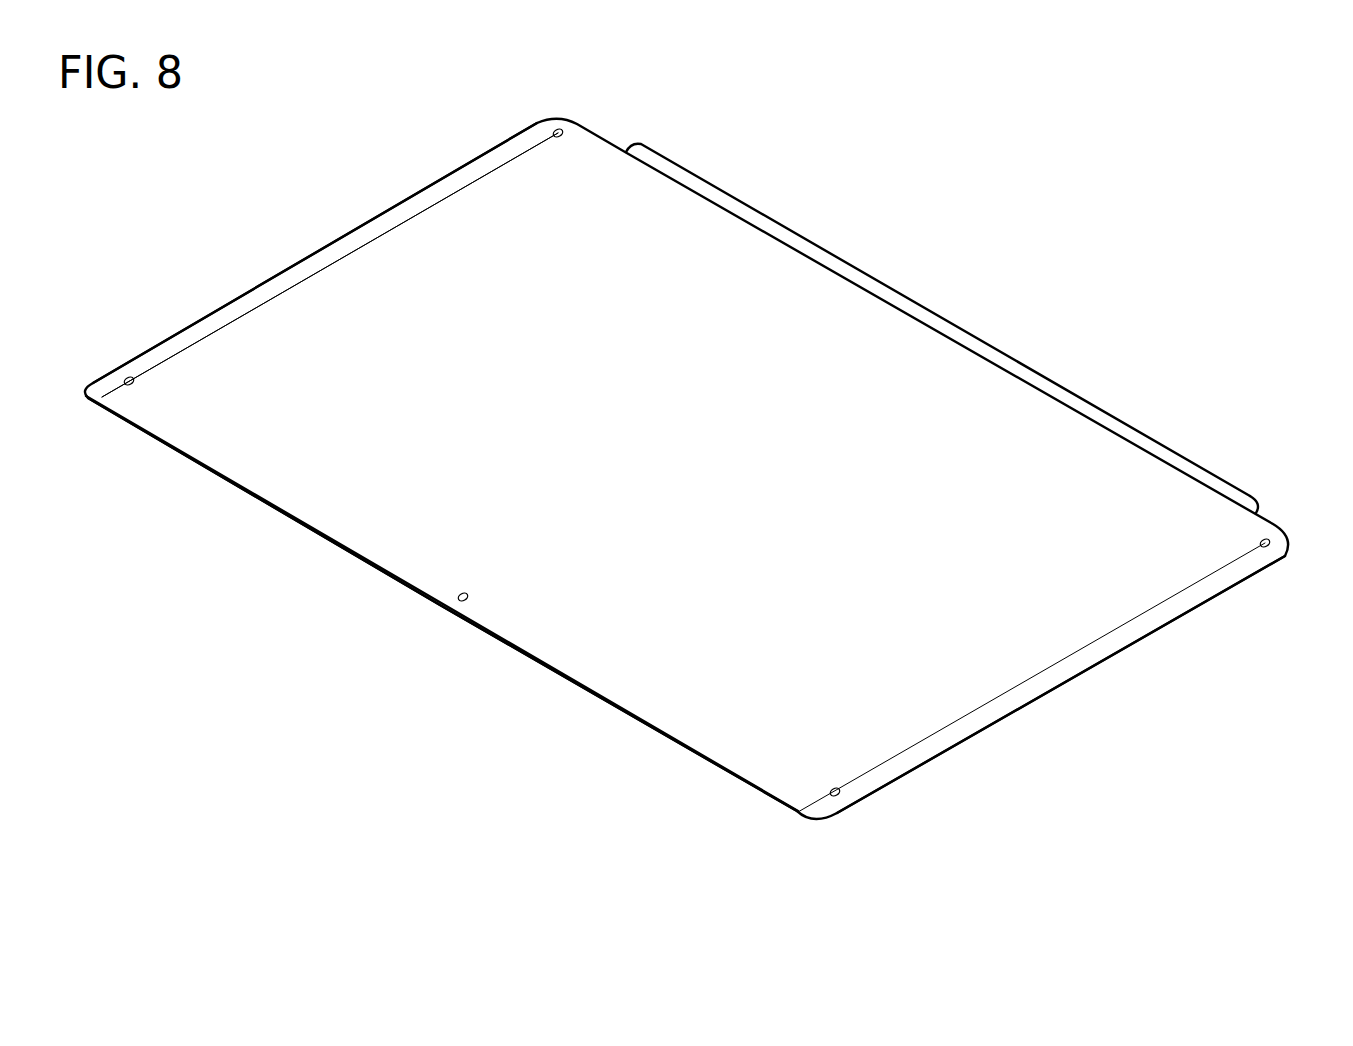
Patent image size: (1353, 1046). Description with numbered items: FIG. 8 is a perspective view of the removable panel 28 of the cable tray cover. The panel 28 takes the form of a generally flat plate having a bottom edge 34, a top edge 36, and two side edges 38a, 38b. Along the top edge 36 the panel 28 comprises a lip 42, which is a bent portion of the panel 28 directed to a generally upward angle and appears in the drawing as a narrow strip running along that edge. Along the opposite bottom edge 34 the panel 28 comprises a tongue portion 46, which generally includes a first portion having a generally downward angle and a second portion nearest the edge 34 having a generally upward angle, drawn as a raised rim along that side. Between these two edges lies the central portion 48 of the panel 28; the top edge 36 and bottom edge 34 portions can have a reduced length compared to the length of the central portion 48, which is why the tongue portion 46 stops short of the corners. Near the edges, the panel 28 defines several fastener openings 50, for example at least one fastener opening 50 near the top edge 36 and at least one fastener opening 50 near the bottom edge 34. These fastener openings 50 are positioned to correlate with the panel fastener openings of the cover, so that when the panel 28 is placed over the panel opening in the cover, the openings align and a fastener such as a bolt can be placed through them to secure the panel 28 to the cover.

The panel 28 is at (1148, 185).
The bottom edge 34 is at (1193, 470).
The top edge 36 is at (628, 712).
The side edge 38a is at (390, 216).
The side edge 38b is at (1112, 652).
The lip 42 is at (306, 527).
The tongue portion 46 is at (780, 228).
The central portion 48 is at (875, 357).
The fastener opening 50 is at (556, 129).